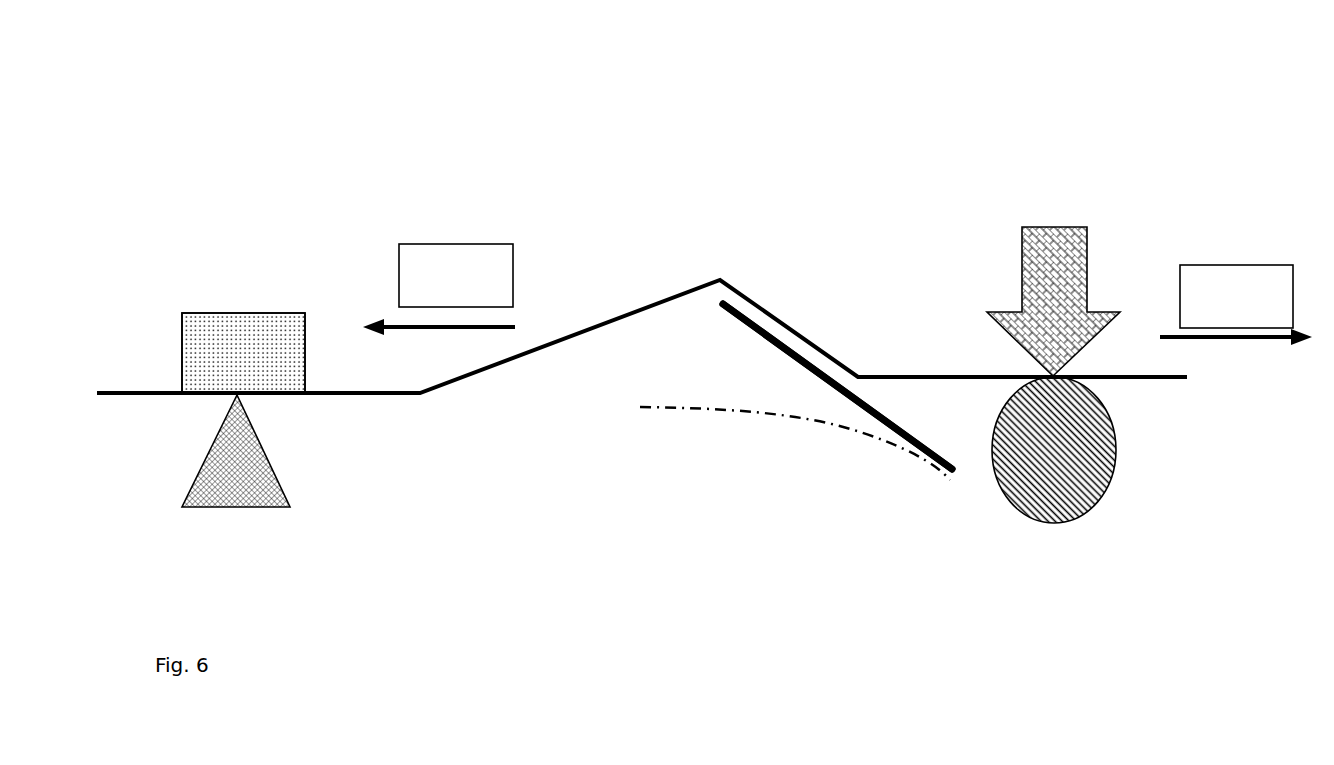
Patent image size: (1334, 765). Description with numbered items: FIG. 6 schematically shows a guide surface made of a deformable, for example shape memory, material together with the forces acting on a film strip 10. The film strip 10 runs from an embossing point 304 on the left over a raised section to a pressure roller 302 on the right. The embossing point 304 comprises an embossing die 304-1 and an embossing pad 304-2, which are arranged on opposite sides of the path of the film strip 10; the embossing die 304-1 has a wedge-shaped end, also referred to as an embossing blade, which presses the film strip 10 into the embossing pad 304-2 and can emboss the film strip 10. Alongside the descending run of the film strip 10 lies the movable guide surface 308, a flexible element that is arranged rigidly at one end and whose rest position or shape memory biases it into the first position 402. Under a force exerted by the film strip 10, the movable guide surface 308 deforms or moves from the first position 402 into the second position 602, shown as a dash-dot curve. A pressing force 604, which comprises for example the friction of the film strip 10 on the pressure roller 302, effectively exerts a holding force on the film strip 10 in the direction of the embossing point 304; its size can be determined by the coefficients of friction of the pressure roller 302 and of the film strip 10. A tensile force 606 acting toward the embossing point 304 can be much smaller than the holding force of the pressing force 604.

The film strip 10 is at (783, 322).
The pressure roller 302 is at (1110, 485).
The embossing point 304 is at (243, 272).
The embossing die 304-1 is at (287, 490).
The embossing pad 304-2 is at (180, 323).
The movable guide surface 308 is at (782, 353).
The first position 402 is at (816, 386).
The second position 602 is at (800, 417).
The pressing force 604 is at (1053, 223).
The tensile force 606 is at (388, 323).